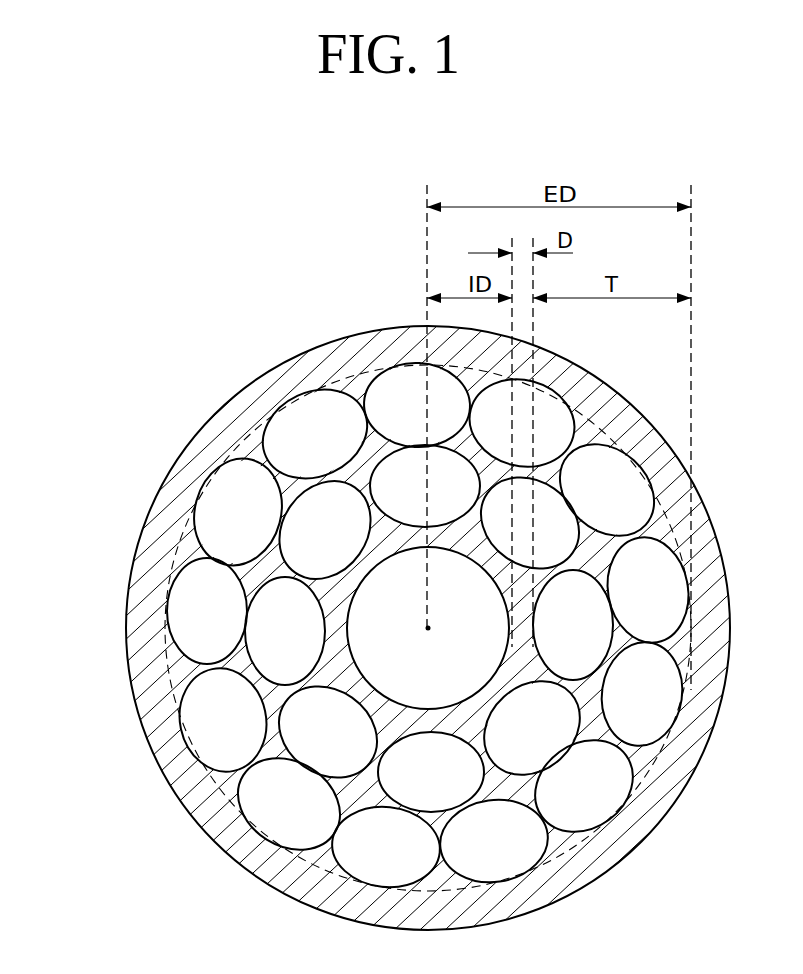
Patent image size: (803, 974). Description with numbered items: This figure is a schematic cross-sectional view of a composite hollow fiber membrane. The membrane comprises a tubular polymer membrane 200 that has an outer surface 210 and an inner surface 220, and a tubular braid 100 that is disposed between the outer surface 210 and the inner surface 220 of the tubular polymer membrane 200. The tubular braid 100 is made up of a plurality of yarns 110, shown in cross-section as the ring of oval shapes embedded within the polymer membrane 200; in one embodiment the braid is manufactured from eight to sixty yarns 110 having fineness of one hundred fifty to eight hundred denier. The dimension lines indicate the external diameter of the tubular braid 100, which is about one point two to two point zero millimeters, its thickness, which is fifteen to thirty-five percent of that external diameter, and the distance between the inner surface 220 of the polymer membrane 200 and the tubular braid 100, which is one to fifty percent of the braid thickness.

The tubular braid 100 is at (305, 398).
The yarns 110 is at (246, 474).
The tubular polymer membrane 200 is at (158, 508).
The outer surface 210 is at (132, 565).
The inner surface 220 is at (350, 606).